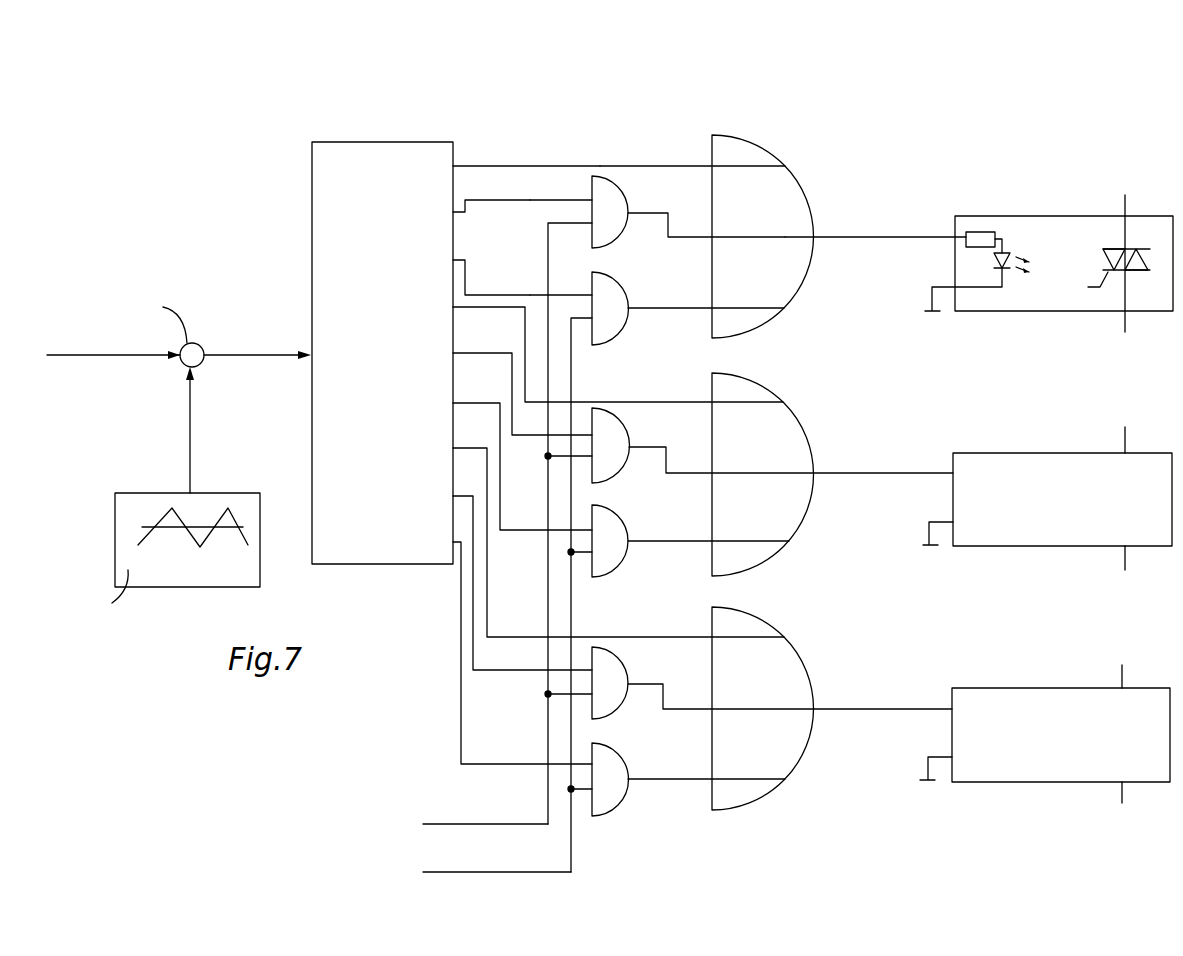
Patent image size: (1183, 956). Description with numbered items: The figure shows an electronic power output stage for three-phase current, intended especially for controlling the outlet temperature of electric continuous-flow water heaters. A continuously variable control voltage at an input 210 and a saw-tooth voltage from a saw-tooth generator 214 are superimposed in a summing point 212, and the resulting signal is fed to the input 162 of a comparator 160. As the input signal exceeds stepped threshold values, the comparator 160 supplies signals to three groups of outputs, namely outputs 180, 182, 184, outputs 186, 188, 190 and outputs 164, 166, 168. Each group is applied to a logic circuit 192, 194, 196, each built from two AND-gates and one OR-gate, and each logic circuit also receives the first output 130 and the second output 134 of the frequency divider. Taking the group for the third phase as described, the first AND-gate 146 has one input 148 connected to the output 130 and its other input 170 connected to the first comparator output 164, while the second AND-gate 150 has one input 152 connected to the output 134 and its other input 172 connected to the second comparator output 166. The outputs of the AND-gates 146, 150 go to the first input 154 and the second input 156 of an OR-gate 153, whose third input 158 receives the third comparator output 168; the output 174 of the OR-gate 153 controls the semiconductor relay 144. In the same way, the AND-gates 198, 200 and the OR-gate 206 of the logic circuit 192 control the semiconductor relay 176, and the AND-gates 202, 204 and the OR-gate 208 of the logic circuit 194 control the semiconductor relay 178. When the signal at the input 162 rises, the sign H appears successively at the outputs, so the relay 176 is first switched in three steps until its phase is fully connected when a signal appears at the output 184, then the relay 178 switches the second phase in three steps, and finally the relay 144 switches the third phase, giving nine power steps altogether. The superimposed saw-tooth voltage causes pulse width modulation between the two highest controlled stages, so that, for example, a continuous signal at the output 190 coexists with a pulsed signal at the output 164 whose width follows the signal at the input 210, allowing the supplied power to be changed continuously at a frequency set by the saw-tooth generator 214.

The first output of the frequency divider 130 is at (430, 871).
The second output of the frequency divider 134 is at (462, 809).
The semiconductor relay 144 is at (1013, 225).
The first AND-gate 146 is at (630, 296).
The input of the first AND-gate 148 is at (588, 320).
The second AND-gate 150 is at (622, 203).
The input of the second AND-gate 152 is at (577, 227).
The OR-gate 153 is at (773, 152).
The first input of the OR-gate 154 is at (690, 311).
The second input of the OR-gate 156 is at (688, 236).
The third input of the OR-gate 158 is at (698, 164).
The comparator 160 is at (446, 148).
The input of the comparator 162 is at (285, 355).
The first output of the comparator 164 is at (467, 285).
The second output of the comparator 166 is at (478, 202).
The third output of the comparator 168 is at (490, 168).
The other input of the first AND-gate 170 is at (585, 295).
The other input of the second AND-gate 172 is at (578, 199).
The output of the OR-gate 174 is at (832, 237).
The semiconductor relay 176 is at (1002, 700).
The semiconductor relay 178 is at (998, 463).
The comparator output 180 is at (453, 542).
The comparator output 182 is at (453, 495).
The comparator output 184 is at (453, 448).
The comparator output 186 is at (453, 402).
The comparator output 188 is at (453, 355).
The comparator output 190 is at (453, 306).
The logic circuit 192 is at (792, 680).
The logic circuit 194 is at (798, 461).
The logic circuit 196 is at (811, 222).
The AND-gate 198 is at (618, 773).
The AND-gate 200 is at (620, 674).
The AND-gate 202 is at (628, 531).
The AND-gate 204 is at (628, 438).
The OR-gate 206 is at (792, 682).
The OR-gate 208 is at (787, 403).
The input 210 is at (70, 353).
The summing point 212 is at (197, 345).
The saw-tooth generator 214 is at (208, 493).